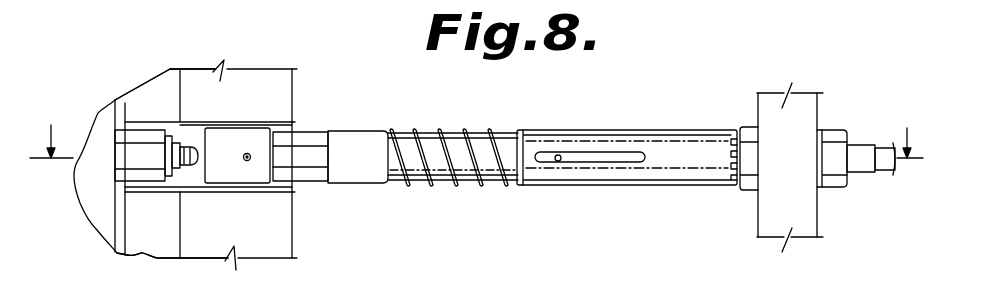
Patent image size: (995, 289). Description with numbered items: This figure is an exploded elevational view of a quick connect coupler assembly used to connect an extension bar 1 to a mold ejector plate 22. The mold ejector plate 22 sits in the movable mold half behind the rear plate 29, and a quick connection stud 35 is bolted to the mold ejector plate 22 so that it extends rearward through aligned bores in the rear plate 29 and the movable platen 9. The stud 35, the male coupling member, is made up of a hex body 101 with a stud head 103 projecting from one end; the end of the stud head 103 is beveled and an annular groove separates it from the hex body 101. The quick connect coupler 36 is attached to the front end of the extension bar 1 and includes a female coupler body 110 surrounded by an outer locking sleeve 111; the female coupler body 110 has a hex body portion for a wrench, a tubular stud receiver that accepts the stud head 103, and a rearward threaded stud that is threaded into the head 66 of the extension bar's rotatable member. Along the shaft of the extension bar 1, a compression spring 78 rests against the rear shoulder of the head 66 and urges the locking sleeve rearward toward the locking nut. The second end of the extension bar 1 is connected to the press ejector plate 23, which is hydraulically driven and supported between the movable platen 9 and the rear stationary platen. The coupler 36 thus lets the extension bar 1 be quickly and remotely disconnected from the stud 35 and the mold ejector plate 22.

The extension bar 1 is at (566, 130).
The movable platen 9 is at (476, 134).
The mold ejector plate 22 is at (82, 185).
The press ejector plate 23 is at (758, 223).
The rear plate 29 is at (143, 255).
The quick connection stud 35 is at (166, 128).
The quick connect coupler 36 is at (310, 121).
The head of rotatable member 66 is at (353, 131).
The compression spring 78 is at (430, 183).
The hex body 101 is at (122, 157).
The stud head 103 is at (187, 181).
The female coupler body 110 is at (307, 187).
The outer locking sleeve 111 is at (233, 178).